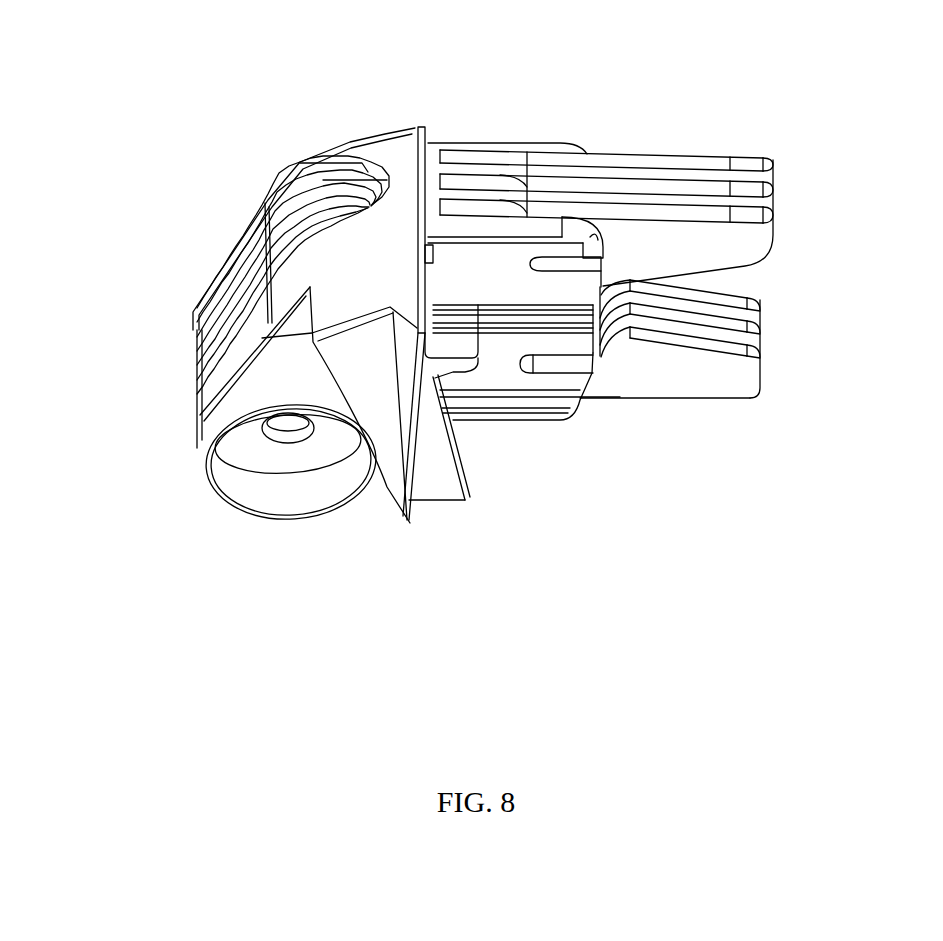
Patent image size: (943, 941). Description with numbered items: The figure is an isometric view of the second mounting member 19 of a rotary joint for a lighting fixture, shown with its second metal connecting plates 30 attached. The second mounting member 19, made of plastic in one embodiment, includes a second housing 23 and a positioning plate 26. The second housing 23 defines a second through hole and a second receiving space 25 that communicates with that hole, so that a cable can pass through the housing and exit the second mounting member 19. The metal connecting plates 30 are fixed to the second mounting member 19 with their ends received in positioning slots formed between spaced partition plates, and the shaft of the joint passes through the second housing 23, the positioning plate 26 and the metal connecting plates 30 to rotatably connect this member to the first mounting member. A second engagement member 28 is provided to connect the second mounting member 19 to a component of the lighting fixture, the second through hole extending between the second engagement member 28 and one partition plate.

The second mounting member 19 is at (372, 248).
The second housing 23 is at (252, 377).
The second receiving space 25 is at (272, 455).
The positioning plate 26 is at (268, 200).
The second engagement member 28 is at (460, 443).
The metal connecting plates 30 is at (713, 370).